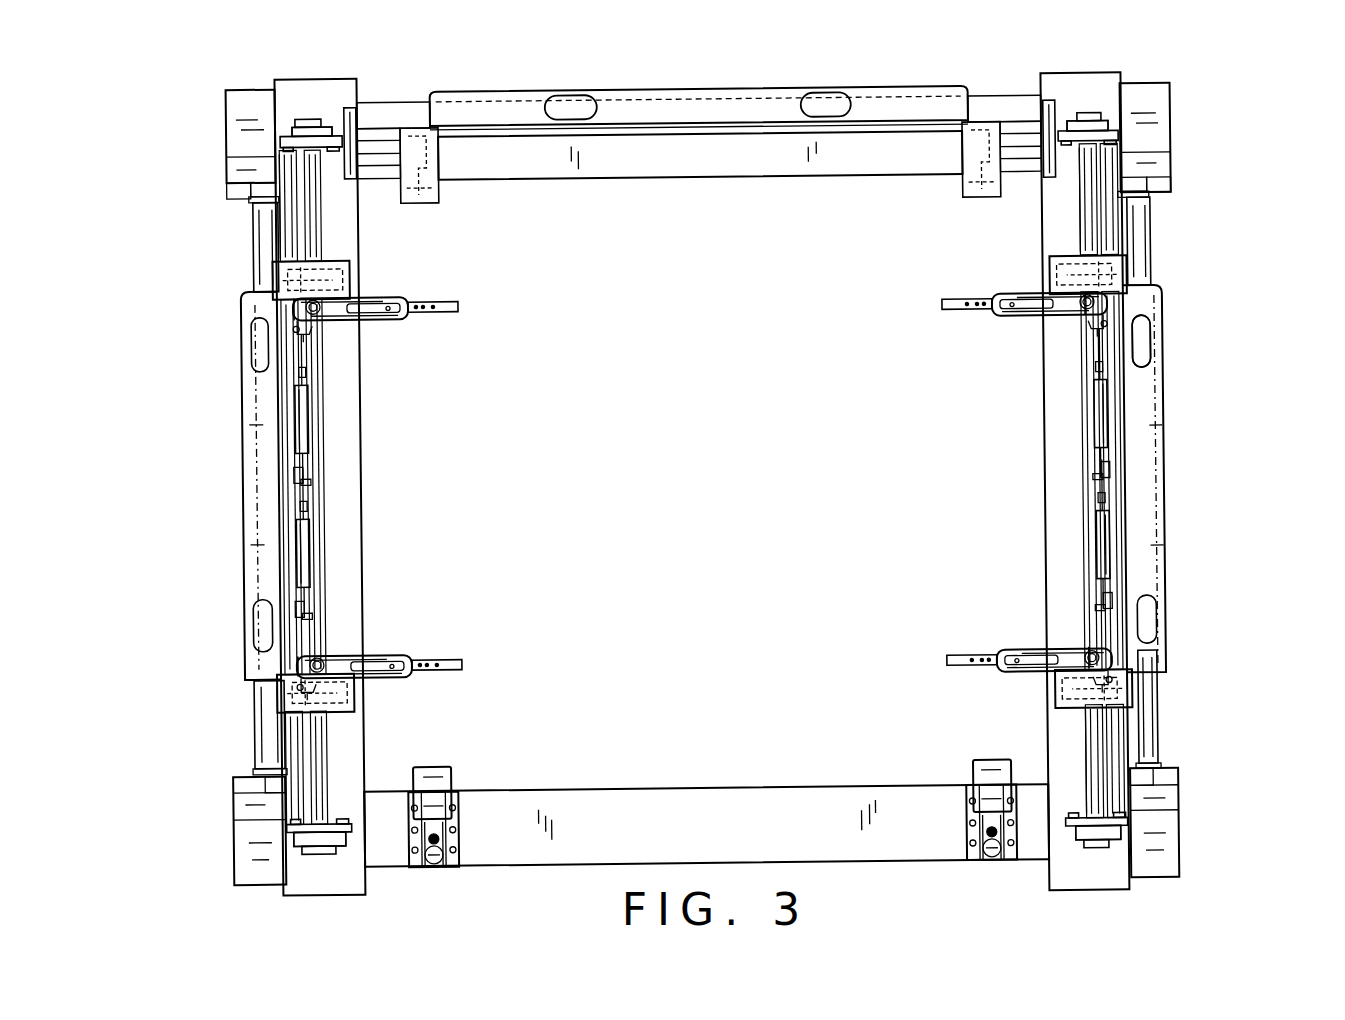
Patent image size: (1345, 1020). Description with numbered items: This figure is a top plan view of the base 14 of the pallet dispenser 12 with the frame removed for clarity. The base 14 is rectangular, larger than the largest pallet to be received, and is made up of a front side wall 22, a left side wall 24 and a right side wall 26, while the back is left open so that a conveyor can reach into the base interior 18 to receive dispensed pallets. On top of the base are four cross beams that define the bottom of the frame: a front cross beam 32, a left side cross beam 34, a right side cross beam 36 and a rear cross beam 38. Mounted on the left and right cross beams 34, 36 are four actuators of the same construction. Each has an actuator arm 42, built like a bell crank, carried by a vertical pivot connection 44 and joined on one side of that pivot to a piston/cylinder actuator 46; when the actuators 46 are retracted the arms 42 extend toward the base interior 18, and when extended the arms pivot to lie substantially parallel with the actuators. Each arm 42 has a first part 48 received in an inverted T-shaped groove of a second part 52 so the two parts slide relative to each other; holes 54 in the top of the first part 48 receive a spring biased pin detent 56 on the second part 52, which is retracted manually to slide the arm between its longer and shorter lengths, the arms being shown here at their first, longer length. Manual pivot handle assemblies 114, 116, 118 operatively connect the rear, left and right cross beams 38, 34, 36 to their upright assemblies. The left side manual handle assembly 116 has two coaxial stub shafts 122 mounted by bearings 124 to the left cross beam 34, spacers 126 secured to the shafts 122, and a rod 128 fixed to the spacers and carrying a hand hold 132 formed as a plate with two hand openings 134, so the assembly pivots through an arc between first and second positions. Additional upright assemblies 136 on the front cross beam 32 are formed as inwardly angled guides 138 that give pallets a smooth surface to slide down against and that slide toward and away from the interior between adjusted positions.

The pallet dispenser 12 is at (1280, 152).
The base 14 is at (572, 866).
The base interior 18 is at (727, 436).
The front side wall 22 is at (490, 866).
The left side wall 24 is at (250, 120).
The right side wall 26 is at (1135, 112).
The front cross beam 32 is at (866, 835).
The left side cross beam 34 is at (300, 878).
The right side cross beam 36 is at (1168, 848).
The rear cross beam 38 is at (392, 112).
The actuator arm 42 is at (327, 328).
The vertical pivot connection 44 is at (300, 285).
The piston/cylinder actuator 46 is at (300, 420).
The arm first part 48 is at (385, 296).
The arm second part 52 is at (345, 292).
The holes 54 is at (435, 312).
The spring biased pin detent 56 is at (385, 318).
The manual pivot handle assembly 114 is at (690, 90).
The left side manual handle assembly 116 is at (240, 492).
The right side manual handle assembly 118 is at (1160, 466).
The stub shaft 122 is at (1090, 180).
The bearing 124 is at (1088, 128).
The spacer 126 is at (1132, 192).
The rod 128 is at (1140, 242).
The hand hold 132 is at (1140, 312).
The hand opening 134 is at (1147, 347).
The additional upright assembly 136 is at (462, 768).
The angled guide 138 is at (428, 766).